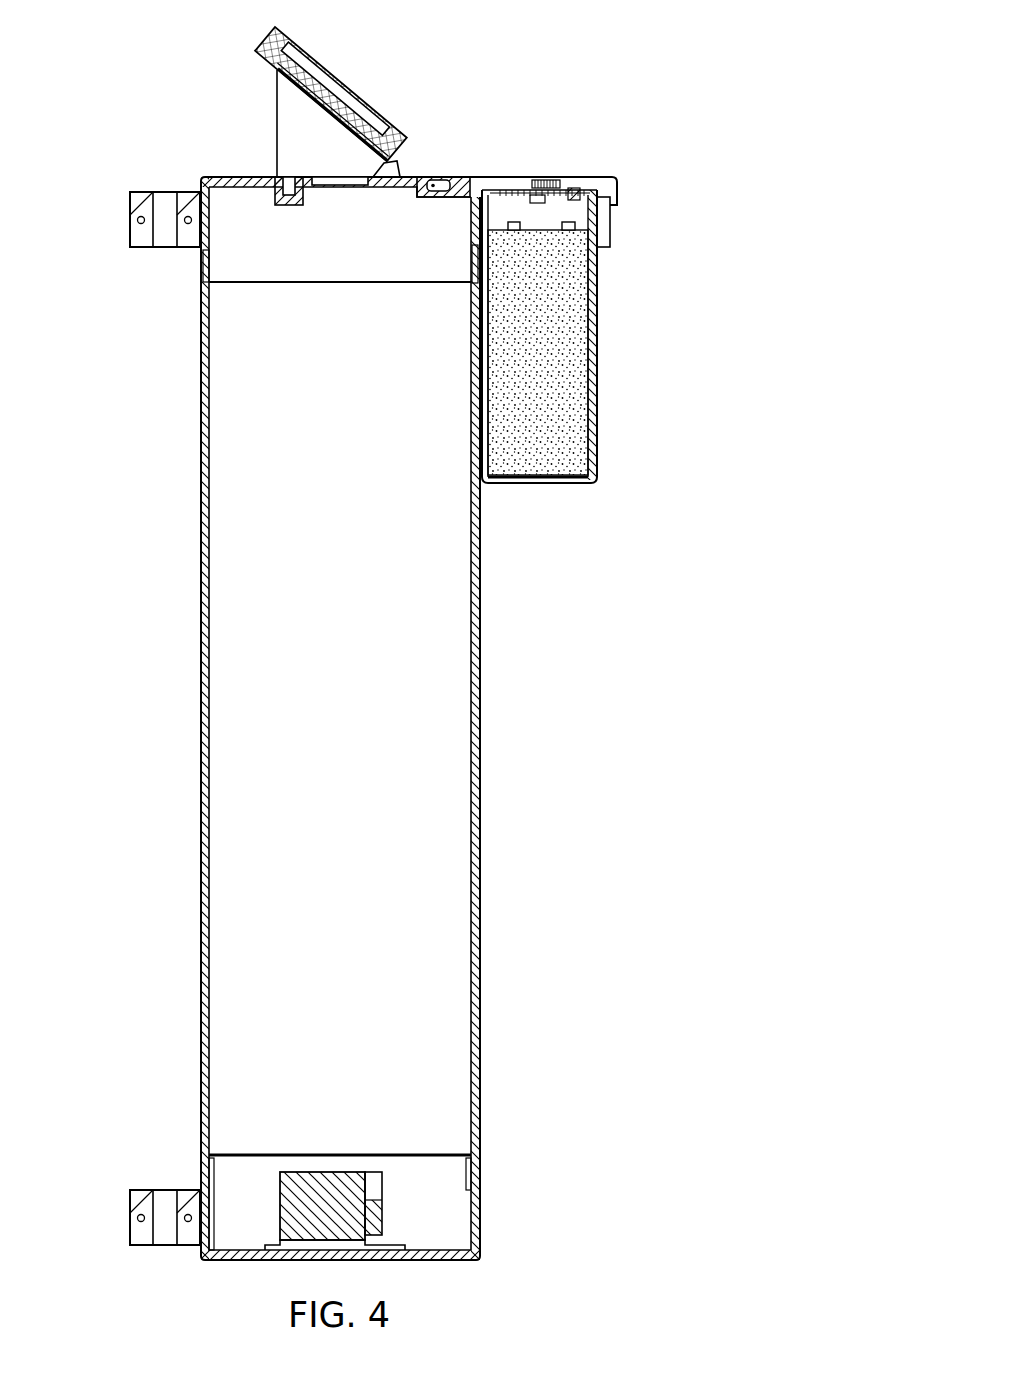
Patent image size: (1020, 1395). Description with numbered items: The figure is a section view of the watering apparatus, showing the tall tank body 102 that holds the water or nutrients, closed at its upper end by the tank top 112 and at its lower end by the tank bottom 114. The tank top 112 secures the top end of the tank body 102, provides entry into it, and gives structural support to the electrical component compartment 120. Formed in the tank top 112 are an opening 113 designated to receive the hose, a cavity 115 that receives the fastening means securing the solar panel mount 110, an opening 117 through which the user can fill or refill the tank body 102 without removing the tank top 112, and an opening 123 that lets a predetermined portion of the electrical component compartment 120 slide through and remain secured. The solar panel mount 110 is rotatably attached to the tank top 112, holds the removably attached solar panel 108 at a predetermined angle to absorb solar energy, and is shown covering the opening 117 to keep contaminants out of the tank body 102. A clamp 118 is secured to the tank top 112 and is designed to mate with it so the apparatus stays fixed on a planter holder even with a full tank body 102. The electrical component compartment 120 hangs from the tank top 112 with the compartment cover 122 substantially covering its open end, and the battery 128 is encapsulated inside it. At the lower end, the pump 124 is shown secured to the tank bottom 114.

The tank body 102 is at (480, 717).
The solar panel 108 is at (320, 82).
The solar panel mount 110 is at (287, 102).
The tank top 112 is at (222, 267).
The opening 113 is at (232, 181).
The tank bottom 114 is at (233, 1255).
The cavity 115 is at (290, 181).
The opening 117 is at (342, 184).
The clamp 118 is at (140, 192).
The electrical component compartment 120 is at (597, 445).
The compartment cover 122 is at (593, 190).
The opening 123 is at (592, 192).
The pump 124 is at (291, 1180).
The battery 128 is at (570, 324).